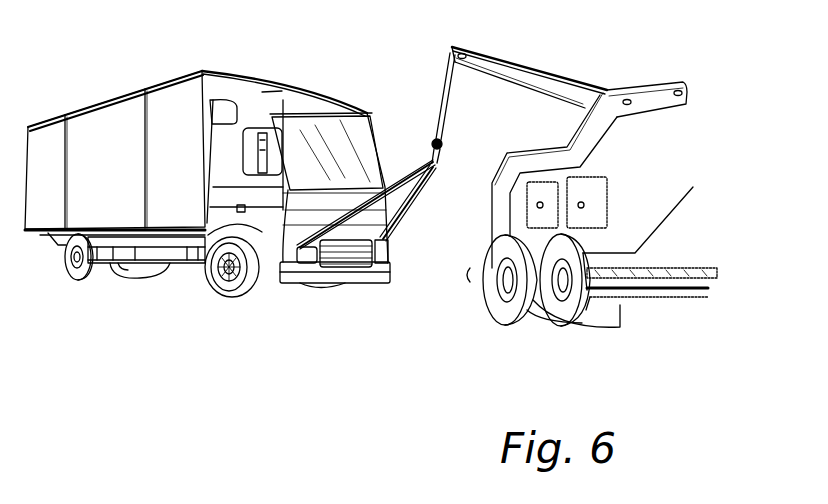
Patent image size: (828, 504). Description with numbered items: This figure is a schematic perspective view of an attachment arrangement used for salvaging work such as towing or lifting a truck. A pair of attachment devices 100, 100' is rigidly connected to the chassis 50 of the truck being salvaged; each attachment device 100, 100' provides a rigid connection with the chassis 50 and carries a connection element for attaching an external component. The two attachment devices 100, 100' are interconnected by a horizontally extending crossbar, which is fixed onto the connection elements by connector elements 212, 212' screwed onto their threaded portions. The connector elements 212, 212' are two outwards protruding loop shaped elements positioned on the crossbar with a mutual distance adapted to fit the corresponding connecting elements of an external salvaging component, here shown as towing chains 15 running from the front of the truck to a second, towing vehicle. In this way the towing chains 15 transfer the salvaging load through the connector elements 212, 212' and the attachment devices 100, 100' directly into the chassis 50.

The attachment device 100 is at (560, 187).
The attachment device 100' is at (207, 194).
The towing chains 15 is at (366, 208).
The connector element 212 is at (421, 264).
The connector element 212' is at (352, 253).
The chassis 50 is at (232, 301).